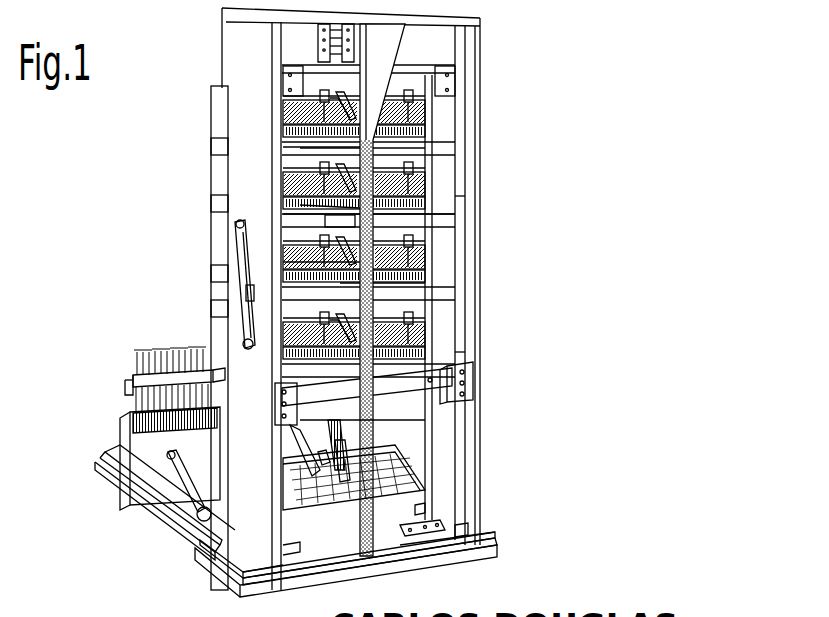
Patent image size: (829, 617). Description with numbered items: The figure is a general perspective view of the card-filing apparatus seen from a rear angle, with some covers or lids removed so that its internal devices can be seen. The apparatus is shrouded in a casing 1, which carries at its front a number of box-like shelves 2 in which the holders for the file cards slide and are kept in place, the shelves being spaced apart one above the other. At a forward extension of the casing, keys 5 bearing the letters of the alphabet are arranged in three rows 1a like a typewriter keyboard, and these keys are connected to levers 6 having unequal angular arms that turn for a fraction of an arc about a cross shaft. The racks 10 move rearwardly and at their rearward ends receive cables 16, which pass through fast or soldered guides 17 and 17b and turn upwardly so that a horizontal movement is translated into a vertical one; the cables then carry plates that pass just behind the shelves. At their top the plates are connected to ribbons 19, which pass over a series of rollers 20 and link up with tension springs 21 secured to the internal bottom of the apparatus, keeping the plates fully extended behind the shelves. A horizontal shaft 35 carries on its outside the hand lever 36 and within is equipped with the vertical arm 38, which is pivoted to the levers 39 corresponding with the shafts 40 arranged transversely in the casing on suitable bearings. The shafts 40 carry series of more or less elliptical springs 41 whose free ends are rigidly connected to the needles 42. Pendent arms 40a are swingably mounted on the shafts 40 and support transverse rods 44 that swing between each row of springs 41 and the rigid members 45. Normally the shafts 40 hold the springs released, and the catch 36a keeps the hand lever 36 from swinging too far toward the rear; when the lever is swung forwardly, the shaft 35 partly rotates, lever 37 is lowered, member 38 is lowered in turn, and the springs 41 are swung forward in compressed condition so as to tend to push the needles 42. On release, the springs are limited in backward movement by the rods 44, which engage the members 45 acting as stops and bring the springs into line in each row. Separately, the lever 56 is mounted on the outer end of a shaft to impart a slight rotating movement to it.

The casing 1 is at (240, 58).
The rows 1a is at (125, 380).
The shelves 2 is at (218, 100).
The keys 5 is at (200, 350).
The levers 6 is at (180, 427).
The racks 10 is at (345, 472).
The cables 16 is at (350, 440).
The guides 17 is at (270, 505).
The guide 17b is at (345, 478).
The ribbons 19 is at (395, 52).
The rollers 20 is at (320, 40).
The tension springs 21 is at (425, 420).
The horizontal shaft 35 is at (330, 222).
The lever 36 is at (240, 305).
The catch 36a is at (247, 290).
The lever 37 is at (360, 206).
The vertical arm 38 is at (360, 148).
The levers 39 is at (300, 147).
The shafts 40 is at (400, 96).
The pendent arms 40a is at (332, 101).
The springs 41 is at (432, 108).
The needles 42 is at (432, 213).
The transverse rods 44 is at (465, 196).
The rigid members 45 is at (345, 284).
The lever 56 is at (192, 492).